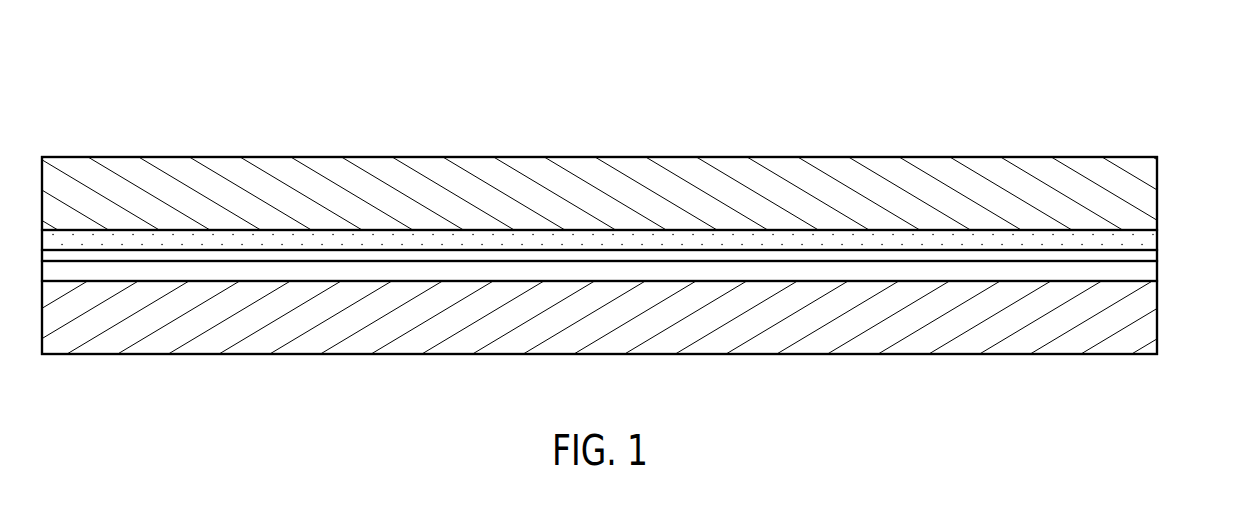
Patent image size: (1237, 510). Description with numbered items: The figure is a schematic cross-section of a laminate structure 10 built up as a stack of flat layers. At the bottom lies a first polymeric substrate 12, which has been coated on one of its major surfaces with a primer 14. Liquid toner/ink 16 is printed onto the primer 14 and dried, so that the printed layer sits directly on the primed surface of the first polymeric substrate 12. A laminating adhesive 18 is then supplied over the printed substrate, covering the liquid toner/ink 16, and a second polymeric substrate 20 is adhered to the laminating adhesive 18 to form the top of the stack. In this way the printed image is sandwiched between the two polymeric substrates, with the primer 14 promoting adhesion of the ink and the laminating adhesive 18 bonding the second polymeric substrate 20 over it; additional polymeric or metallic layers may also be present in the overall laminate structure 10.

The laminate structure 10 is at (872, 102).
The first polymeric substrate 12 is at (1146, 311).
The primer 14 is at (1152, 276).
The liquid toner/ink 16 is at (1152, 255).
The laminating adhesive 18 is at (1153, 240).
The second polymeric substrate 20 is at (1146, 194).